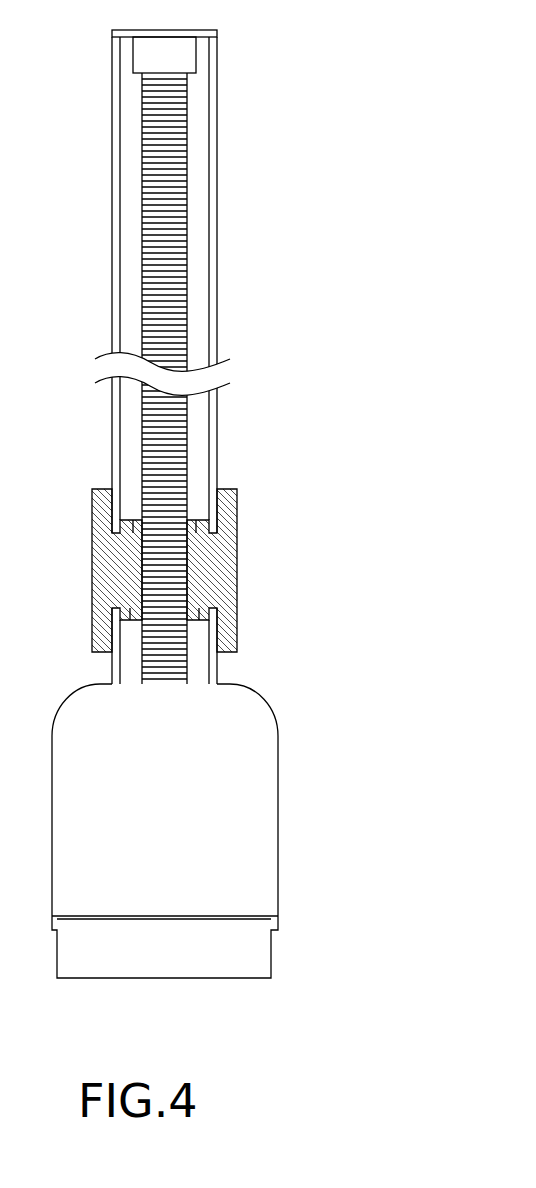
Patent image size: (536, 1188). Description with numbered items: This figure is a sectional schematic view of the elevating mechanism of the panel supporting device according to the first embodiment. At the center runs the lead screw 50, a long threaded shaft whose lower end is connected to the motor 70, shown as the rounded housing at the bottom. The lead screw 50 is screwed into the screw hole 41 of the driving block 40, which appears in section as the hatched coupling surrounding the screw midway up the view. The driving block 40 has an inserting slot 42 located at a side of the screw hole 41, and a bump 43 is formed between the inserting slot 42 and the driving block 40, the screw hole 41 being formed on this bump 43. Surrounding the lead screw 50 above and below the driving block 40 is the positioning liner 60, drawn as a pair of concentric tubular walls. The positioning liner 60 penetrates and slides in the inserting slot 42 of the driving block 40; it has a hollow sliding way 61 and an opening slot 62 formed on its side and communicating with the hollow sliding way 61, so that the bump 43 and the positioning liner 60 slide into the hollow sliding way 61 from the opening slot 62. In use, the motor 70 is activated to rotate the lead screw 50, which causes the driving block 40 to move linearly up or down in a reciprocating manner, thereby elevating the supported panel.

The driving block 40 is at (229, 544).
The screw hole 41 is at (187, 522).
The inserting slot 42 is at (218, 488).
The bump 43 is at (190, 610).
The lead screw 50 is at (163, 301).
The positioning liner 60 is at (231, 281).
The hollow sliding way 61 is at (192, 177).
The opening slot 62 is at (212, 210).
The motor 70 is at (279, 765).